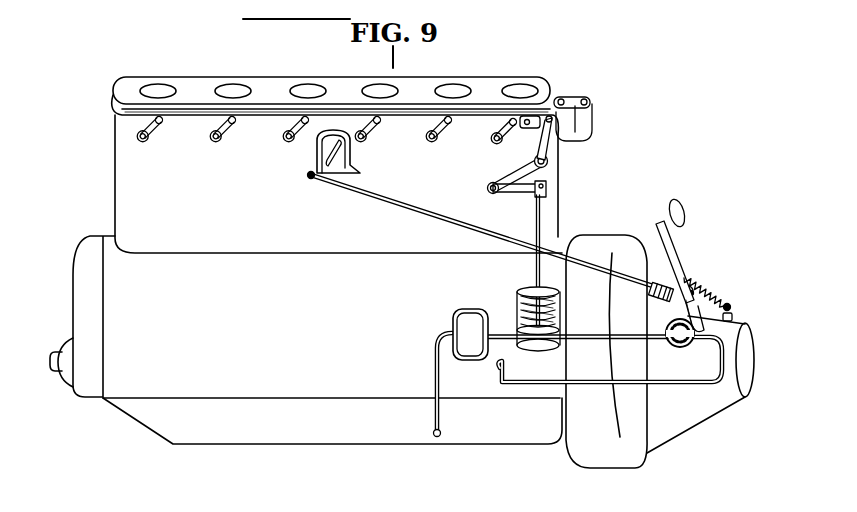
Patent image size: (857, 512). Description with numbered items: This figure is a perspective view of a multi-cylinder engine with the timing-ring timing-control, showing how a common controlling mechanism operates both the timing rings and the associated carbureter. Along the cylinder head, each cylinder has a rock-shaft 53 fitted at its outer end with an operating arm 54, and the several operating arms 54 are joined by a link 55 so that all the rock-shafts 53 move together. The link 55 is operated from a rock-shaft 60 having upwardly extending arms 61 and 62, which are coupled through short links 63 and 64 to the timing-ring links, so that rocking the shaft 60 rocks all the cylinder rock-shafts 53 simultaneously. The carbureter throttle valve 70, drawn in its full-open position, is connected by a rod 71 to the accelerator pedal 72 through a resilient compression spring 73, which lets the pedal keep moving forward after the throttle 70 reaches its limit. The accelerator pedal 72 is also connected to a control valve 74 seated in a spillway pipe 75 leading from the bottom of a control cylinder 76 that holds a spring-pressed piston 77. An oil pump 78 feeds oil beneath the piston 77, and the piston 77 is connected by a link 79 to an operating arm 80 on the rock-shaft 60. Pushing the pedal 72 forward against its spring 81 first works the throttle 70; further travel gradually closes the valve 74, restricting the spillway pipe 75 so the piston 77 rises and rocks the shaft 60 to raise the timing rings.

The rock-shaft 53 is at (143, 142).
The operating arm 54 is at (226, 130).
The link 55 is at (192, 121).
The rock-shaft 60 is at (513, 170).
The arm 61 is at (592, 108).
The arm 62 is at (550, 145).
The short link 63 is at (575, 96).
The short link 64 is at (533, 125).
The carbureter throttle valve 70 is at (317, 148).
The rod 71 is at (441, 224).
The accelerator pedal 72 is at (672, 244).
The compression spring 73 is at (660, 299).
The control valve 74 is at (677, 349).
The spillway pipe 75 is at (637, 339).
The control cylinder 76 is at (517, 300).
The piston 77 is at (546, 342).
The oil pump 78 is at (455, 326).
The link 79 is at (535, 228).
The operating arm 80 is at (497, 194).
The spring 81 is at (703, 290).